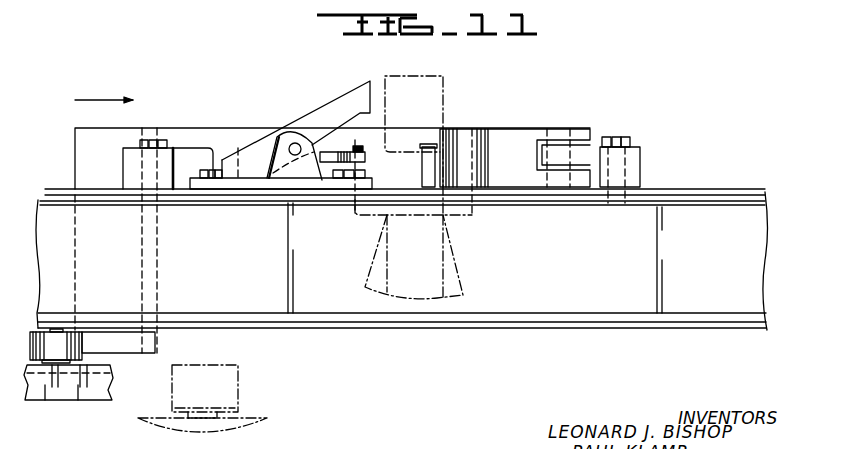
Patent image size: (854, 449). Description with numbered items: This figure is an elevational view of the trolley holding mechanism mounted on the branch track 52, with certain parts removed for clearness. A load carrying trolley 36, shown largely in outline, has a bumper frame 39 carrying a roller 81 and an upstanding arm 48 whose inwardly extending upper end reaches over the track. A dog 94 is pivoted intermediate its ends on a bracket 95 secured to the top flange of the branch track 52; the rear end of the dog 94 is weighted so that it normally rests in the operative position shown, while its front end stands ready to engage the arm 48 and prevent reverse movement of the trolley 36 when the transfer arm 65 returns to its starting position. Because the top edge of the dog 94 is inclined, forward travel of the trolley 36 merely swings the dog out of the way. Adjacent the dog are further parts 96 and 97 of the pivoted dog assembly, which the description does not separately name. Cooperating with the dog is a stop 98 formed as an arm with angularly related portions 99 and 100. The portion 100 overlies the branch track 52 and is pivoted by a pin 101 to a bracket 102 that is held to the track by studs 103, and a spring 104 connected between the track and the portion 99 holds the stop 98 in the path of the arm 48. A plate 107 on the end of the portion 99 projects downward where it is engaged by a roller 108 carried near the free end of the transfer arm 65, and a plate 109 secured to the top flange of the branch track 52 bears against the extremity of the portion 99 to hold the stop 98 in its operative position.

The load carrying trolley 36 is at (447, 117).
The bumper frame 39 is at (235, 423).
The arm 48 is at (445, 216).
The branch track 52 is at (582, 300).
The transfer arm 65 is at (100, 382).
The roller 81 is at (237, 390).
The dog 94 is at (287, 118).
The bracket 95 is at (308, 174).
The lever arm 96 is at (251, 148).
The lever 97 is at (362, 88).
The stop 98 is at (173, 138).
The portion 99 is at (208, 132).
The portion 100 is at (543, 135).
The pin 101 is at (552, 178).
The bracket 102 is at (638, 177).
The studs 103 is at (627, 137).
The spring 104 is at (417, 150).
The plate 107 is at (133, 337).
The roller 108 is at (68, 332).
The plate 109 is at (125, 163).